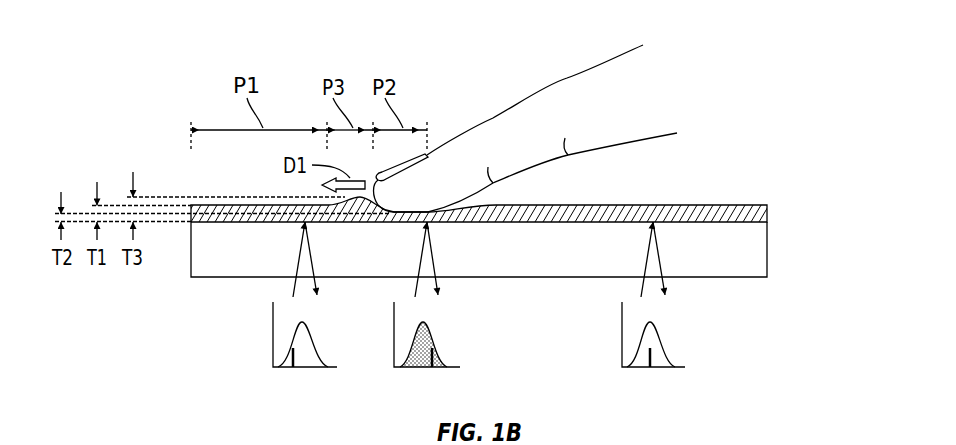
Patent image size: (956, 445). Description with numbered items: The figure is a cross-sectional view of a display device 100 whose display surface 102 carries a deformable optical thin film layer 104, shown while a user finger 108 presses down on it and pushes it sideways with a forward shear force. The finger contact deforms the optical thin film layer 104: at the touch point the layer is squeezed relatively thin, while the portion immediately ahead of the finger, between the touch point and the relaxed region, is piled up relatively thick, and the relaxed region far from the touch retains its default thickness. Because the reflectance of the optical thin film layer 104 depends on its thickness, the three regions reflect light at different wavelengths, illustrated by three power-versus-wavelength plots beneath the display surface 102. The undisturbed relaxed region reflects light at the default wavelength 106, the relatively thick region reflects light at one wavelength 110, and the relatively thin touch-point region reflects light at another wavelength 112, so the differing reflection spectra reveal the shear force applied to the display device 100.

The display device 100 is at (766, 164).
The display surface 102 is at (769, 249).
The optical thin film layer 104 is at (769, 212).
The default wavelength 106 is at (660, 337).
The user finger 108 is at (488, 121).
The wavelength reflected by thick area 110 is at (302, 322).
The wavelength reflected by thin area 112 is at (432, 338).